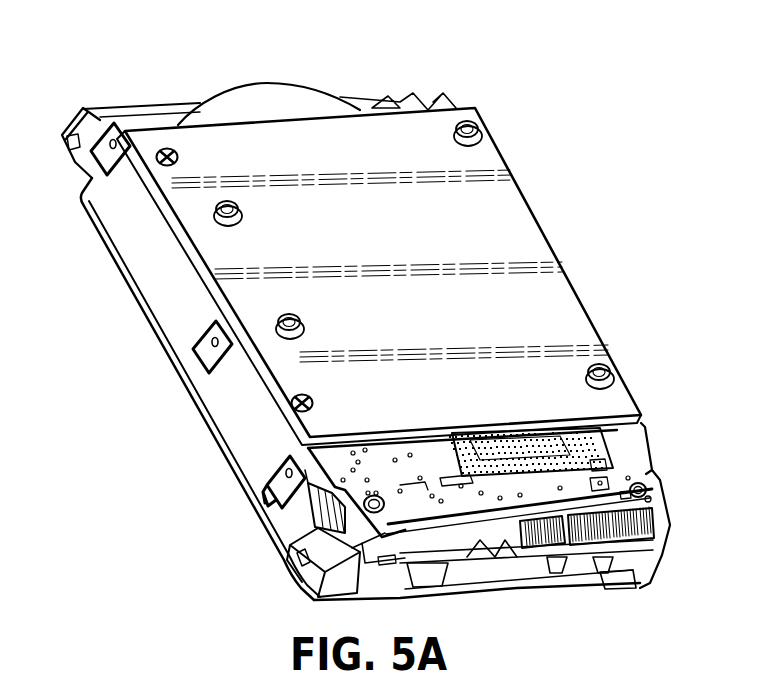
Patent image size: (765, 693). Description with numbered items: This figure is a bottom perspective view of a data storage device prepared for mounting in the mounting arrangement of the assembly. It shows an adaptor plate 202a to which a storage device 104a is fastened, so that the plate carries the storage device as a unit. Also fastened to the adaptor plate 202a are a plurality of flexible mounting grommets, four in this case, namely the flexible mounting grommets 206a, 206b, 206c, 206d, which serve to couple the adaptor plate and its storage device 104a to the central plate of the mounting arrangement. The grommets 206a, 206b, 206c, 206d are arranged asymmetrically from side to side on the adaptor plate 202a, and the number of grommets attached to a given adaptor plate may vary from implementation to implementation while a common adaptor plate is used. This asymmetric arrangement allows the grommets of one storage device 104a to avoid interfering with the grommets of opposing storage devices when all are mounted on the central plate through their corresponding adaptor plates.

The storage device 104a is at (222, 103).
The adaptor plate 202a is at (521, 201).
The flexible mounting grommet 206a is at (215, 220).
The flexible mounting grommet 206b is at (278, 333).
The flexible mounting grommet 206c is at (470, 125).
The flexible mounting grommet 206d is at (603, 370).